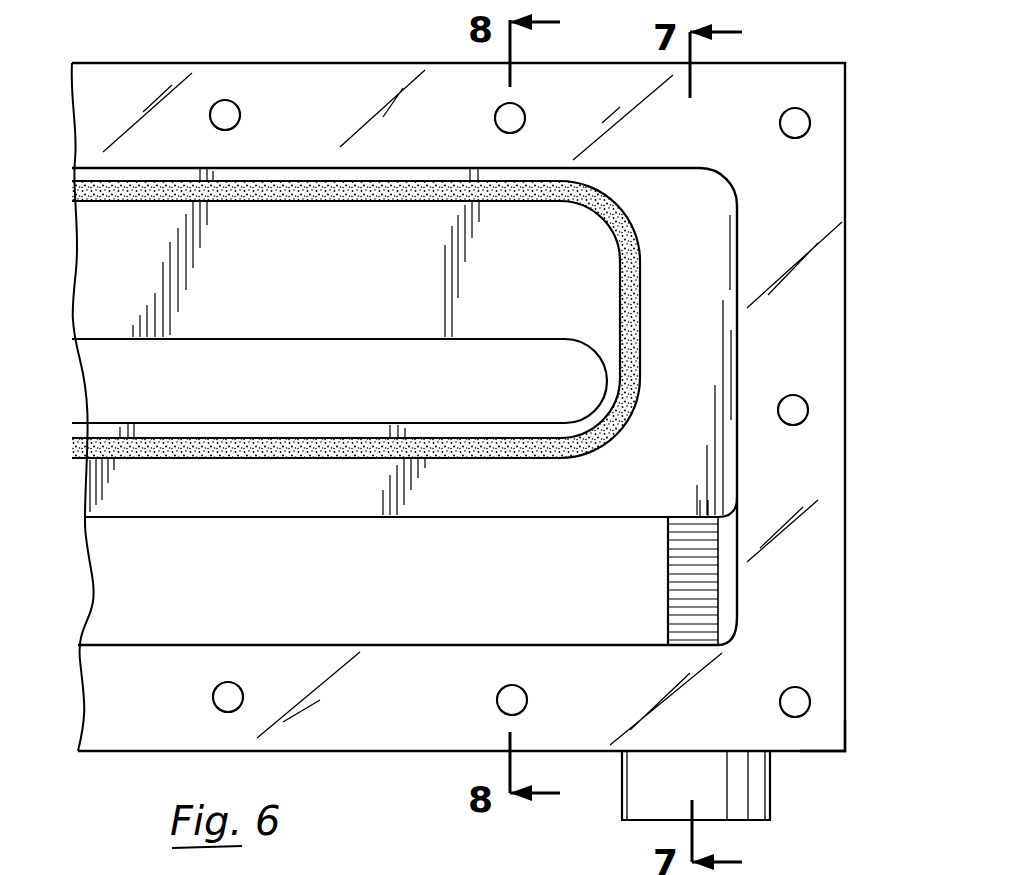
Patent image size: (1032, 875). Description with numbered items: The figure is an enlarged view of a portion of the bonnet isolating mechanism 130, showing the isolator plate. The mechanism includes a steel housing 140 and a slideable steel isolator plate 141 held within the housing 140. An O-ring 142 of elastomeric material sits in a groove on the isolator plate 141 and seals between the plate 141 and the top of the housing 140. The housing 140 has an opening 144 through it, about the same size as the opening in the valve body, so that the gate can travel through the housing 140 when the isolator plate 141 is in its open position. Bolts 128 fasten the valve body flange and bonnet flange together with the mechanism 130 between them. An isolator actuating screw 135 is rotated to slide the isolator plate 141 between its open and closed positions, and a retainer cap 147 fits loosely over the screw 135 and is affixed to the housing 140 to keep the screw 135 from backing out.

The bolts 128 is at (225, 108).
The bonnet isolating mechanism 130 is at (68, 58).
The isolator actuating screw 135 is at (718, 585).
The housing 140 is at (845, 752).
The isolator plate 141 is at (718, 362).
The O-ring 142 is at (640, 252).
The opening 144 is at (232, 397).
The retainer cap 147 is at (770, 806).